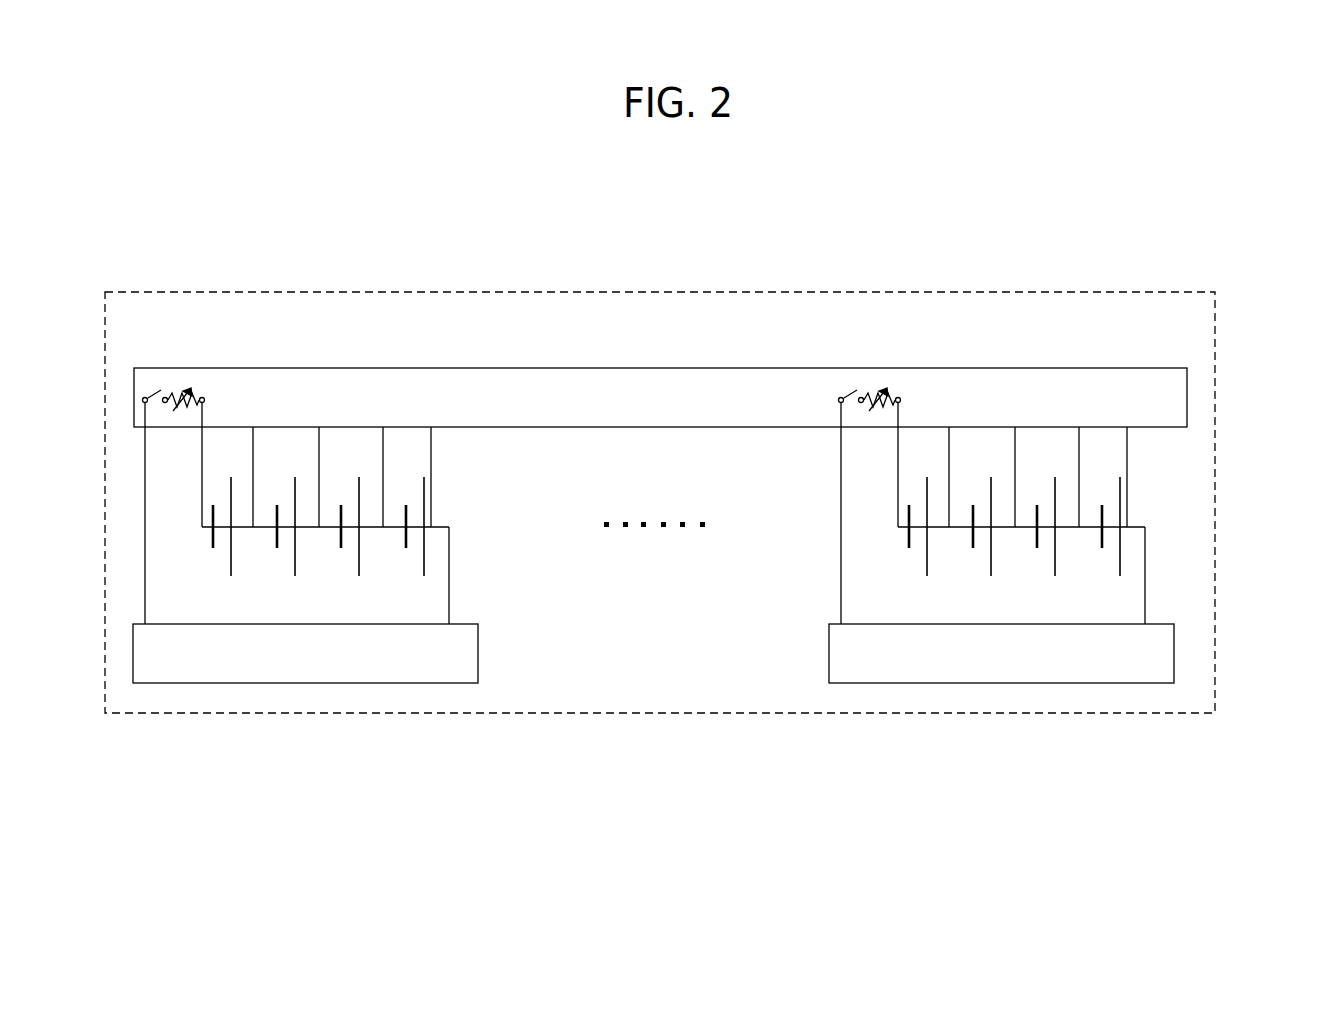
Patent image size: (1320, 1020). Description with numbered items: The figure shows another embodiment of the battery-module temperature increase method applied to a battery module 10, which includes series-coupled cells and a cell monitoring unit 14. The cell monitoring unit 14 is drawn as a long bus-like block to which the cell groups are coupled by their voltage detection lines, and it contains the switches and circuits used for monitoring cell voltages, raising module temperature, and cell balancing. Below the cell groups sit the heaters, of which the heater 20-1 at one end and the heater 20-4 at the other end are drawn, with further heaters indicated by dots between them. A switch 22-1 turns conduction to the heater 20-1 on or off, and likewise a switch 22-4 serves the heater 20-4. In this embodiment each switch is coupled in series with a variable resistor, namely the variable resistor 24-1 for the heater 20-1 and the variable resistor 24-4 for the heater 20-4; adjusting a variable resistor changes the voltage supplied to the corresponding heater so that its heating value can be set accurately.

The battery module 10 is at (1216, 350).
The cell monitoring unit 14 is at (620, 390).
The heater 1 20-1 is at (315, 658).
The heater 4 20-4 is at (1012, 658).
The switch 1 22-1 is at (152, 383).
The switch 4 22-4 is at (848, 383).
The variable resistor 24-1 is at (190, 380).
The variable resistor 24-4 is at (886, 380).